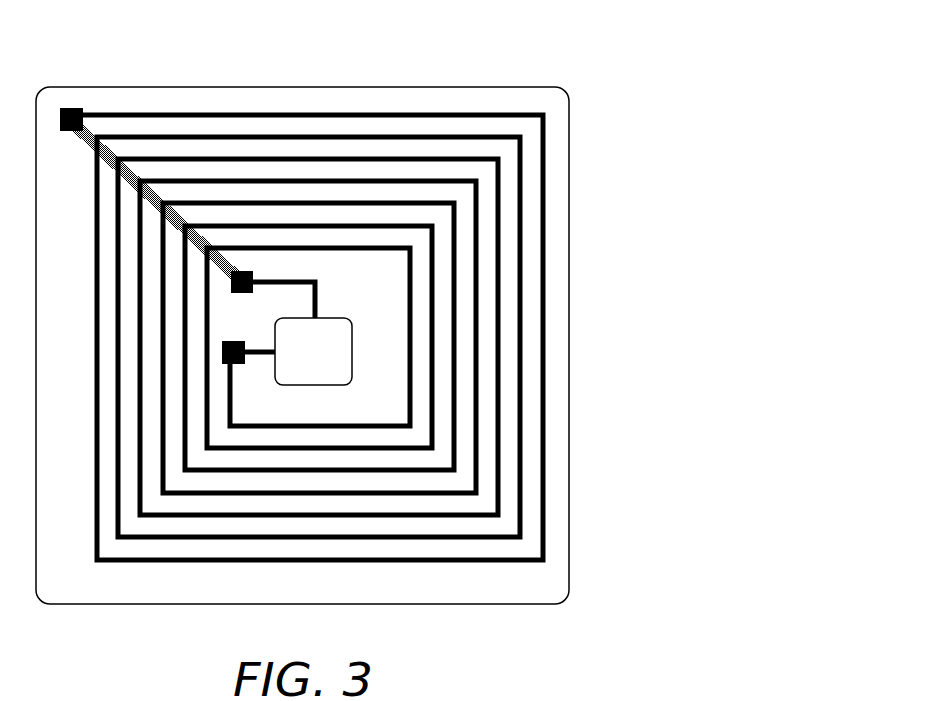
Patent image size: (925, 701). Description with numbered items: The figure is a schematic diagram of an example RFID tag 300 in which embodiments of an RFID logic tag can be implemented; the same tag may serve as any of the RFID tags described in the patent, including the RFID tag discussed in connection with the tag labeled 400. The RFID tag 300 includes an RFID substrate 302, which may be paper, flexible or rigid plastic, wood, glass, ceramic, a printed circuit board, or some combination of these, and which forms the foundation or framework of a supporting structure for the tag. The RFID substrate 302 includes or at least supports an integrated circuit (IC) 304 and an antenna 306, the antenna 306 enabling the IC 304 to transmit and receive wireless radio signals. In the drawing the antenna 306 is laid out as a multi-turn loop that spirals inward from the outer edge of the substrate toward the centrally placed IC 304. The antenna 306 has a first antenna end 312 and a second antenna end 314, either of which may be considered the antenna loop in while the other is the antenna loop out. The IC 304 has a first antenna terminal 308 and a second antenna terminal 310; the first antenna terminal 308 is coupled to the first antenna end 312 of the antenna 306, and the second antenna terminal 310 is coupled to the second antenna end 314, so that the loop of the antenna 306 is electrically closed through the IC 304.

The RFID tag 300 is at (496, 64).
The RFID substrate 302 is at (400, 593).
The integrated circuit (IC) 304 is at (331, 374).
The antenna 306 is at (353, 425).
The first antenna terminal 308 is at (275, 343).
The second antenna terminal 310 is at (315, 317).
The first antenna end 312 is at (242, 364).
The second antenna end 314 is at (293, 273).
The RFID tag (FIG. 4) 400 is at (538, 700).